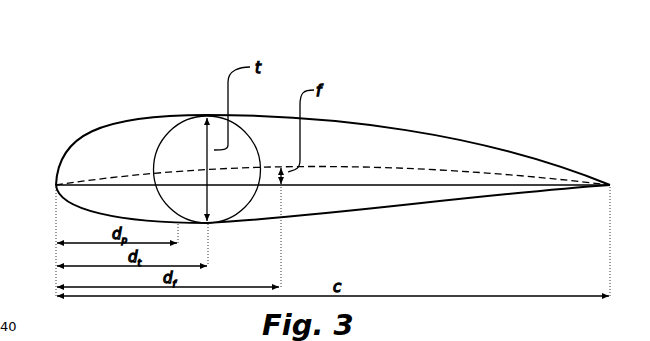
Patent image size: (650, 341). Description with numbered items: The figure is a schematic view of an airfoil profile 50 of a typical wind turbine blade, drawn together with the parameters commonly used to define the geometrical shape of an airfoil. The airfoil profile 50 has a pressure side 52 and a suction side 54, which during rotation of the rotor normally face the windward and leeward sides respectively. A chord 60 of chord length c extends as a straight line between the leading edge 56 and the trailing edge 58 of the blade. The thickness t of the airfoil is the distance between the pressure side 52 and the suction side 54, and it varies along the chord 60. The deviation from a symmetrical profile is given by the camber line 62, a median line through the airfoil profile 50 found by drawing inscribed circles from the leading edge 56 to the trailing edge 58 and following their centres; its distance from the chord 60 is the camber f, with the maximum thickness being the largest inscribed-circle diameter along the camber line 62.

The airfoil profile 50 is at (321, 135).
The pressure side 52 is at (438, 204).
The suction side 54 is at (400, 128).
The leading edge 56 is at (56, 185).
The trailing edge 58 is at (610, 185).
The chord 60 is at (470, 185).
The camber line 62 is at (327, 165).